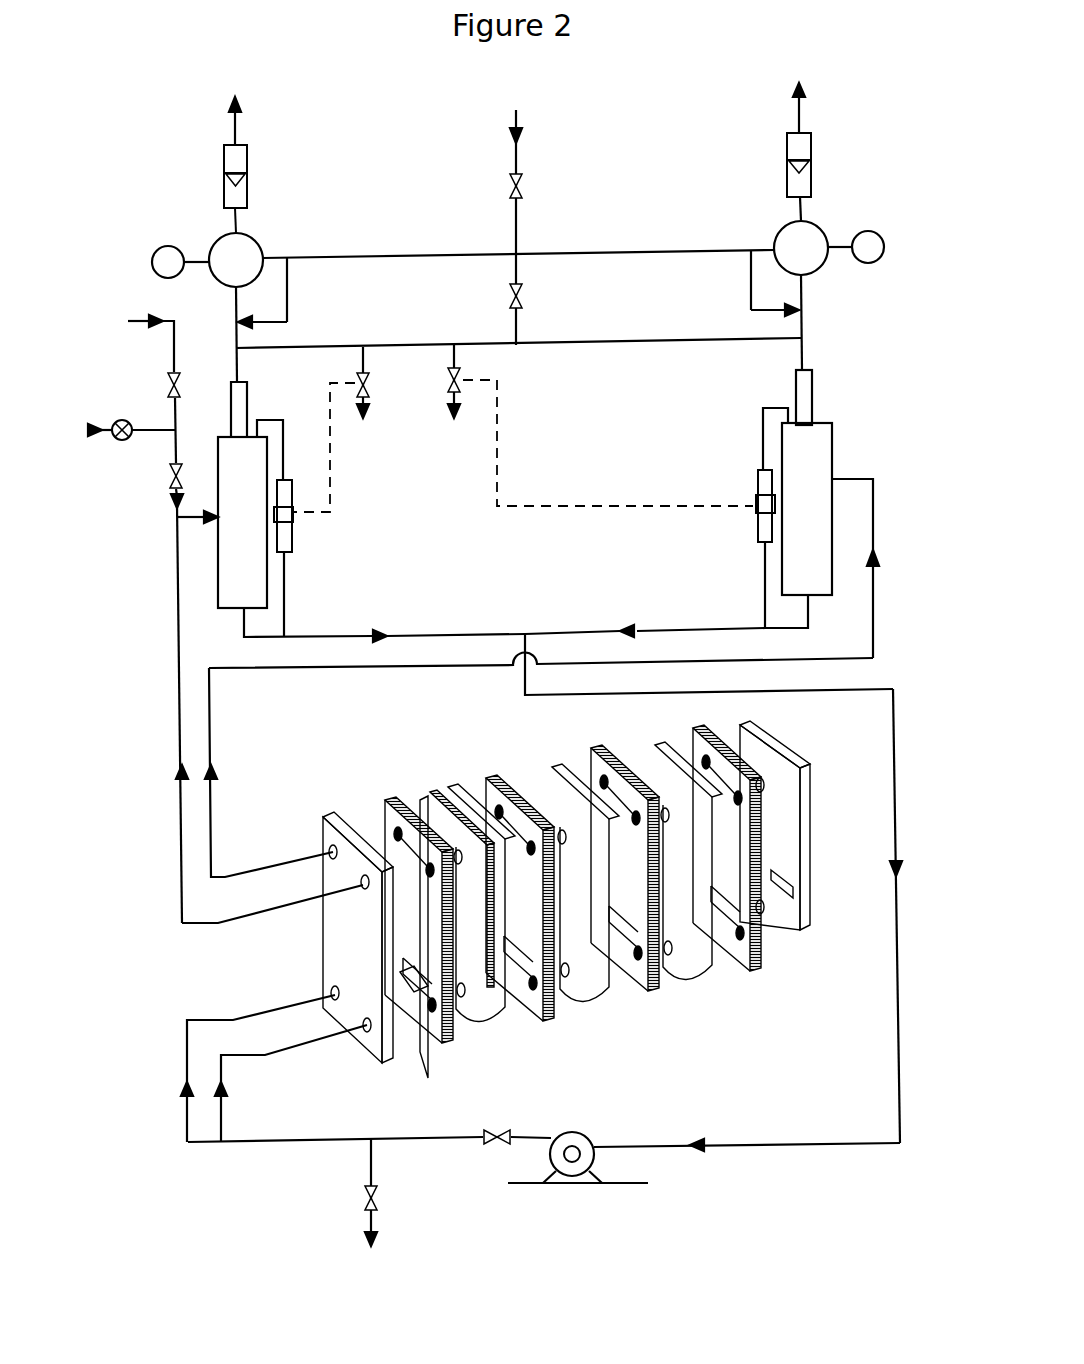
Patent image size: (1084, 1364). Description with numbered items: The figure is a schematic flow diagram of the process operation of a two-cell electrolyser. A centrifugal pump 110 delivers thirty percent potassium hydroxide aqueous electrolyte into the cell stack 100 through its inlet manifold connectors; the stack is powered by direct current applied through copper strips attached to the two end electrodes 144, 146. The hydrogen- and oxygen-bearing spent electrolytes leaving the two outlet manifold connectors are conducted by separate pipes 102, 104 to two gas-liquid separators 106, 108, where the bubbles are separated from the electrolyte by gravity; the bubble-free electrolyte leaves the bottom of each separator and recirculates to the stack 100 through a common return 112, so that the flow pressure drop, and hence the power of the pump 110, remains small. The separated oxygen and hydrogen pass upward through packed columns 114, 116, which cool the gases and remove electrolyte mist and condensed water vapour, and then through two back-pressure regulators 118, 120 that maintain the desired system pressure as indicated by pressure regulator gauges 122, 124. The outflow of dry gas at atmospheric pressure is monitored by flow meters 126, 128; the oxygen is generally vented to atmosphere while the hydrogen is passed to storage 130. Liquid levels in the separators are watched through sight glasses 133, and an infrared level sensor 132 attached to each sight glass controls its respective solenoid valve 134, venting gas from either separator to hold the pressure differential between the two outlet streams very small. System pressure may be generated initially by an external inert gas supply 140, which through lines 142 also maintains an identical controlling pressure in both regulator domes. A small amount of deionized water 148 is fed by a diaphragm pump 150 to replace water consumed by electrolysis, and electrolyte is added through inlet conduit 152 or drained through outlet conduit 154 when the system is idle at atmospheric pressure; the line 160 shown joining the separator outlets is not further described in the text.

The cell stack 100 is at (583, 920).
The pipe 102 is at (210, 722).
The pipe 104 is at (182, 808).
The gas-liquid separator 106 is at (800, 566).
The gas-liquid separator 108 is at (256, 576).
The centrifugal pump 110 is at (583, 1162).
The common return 112 is at (895, 785).
The packed column 114 is at (806, 393).
The packed column 116 is at (233, 423).
The back-pressure regulator 118 is at (243, 250).
The back-pressure regulator 120 is at (790, 240).
The pressure regulator gauge 122 is at (874, 243).
The pressure regulator gauge 124 is at (163, 247).
The flow meter 126 is at (802, 145).
The flow meter 128 is at (232, 164).
The storage 130 is at (249, 99).
The infrared level sensor 132 is at (291, 513).
The sight glass 133 is at (291, 540).
The solenoid valve 134 is at (450, 388).
The external inert gas supply 140 is at (515, 212).
The line 142 is at (363, 257).
The end electrode 144 is at (422, 1052).
The end electrode 146 is at (792, 881).
The deionized water 148 is at (128, 417).
The diaphragm pump 150 is at (122, 441).
The inlet conduit 152 is at (131, 386).
The outlet conduit 154 is at (393, 1192).
The water collection line 160 is at (556, 633).